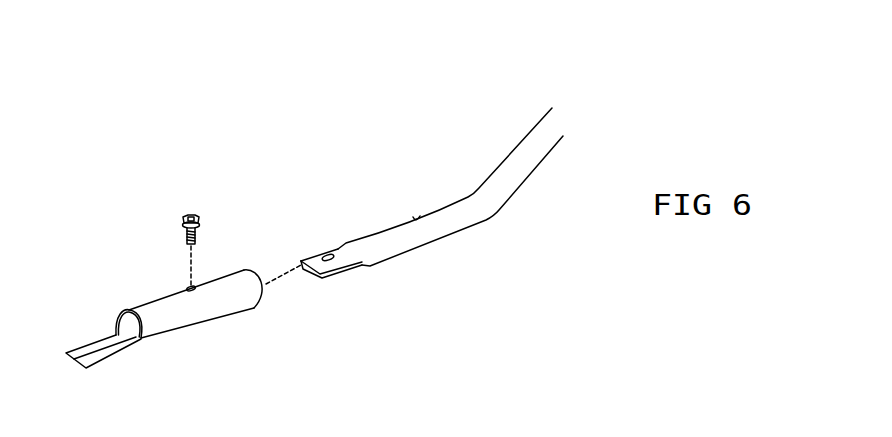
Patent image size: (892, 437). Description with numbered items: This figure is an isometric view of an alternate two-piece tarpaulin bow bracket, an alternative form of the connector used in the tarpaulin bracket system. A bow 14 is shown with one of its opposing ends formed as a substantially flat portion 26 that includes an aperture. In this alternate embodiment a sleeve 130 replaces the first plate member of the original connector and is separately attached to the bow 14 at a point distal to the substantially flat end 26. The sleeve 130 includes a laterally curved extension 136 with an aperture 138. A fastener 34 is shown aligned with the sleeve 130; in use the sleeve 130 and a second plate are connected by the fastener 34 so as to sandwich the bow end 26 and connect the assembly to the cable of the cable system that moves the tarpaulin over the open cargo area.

The bow 14 is at (417, 257).
The substantially flat portion 26 is at (328, 260).
The fastener 34 is at (190, 214).
The sleeve 130 is at (168, 372).
The laterally curved extension 136 is at (76, 360).
The aperture 138 is at (191, 283).